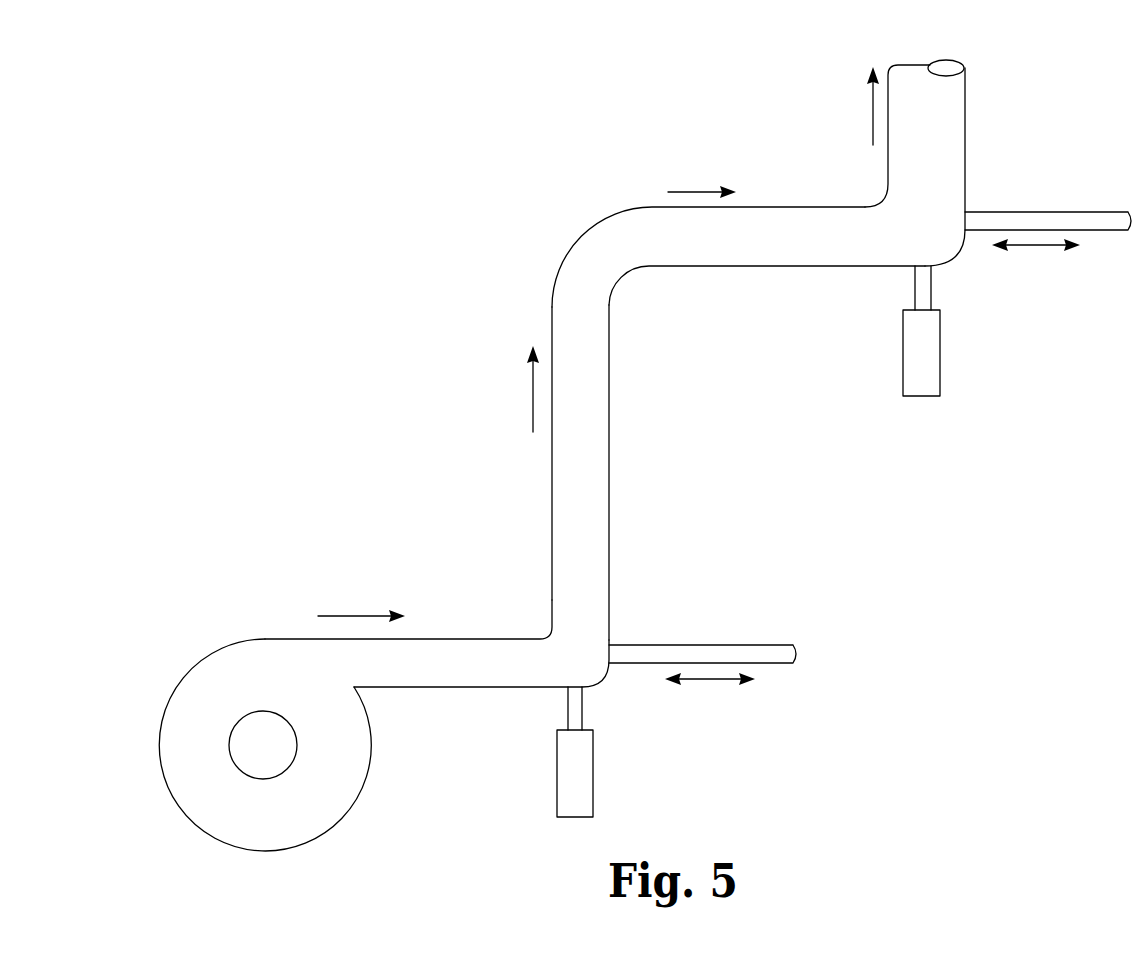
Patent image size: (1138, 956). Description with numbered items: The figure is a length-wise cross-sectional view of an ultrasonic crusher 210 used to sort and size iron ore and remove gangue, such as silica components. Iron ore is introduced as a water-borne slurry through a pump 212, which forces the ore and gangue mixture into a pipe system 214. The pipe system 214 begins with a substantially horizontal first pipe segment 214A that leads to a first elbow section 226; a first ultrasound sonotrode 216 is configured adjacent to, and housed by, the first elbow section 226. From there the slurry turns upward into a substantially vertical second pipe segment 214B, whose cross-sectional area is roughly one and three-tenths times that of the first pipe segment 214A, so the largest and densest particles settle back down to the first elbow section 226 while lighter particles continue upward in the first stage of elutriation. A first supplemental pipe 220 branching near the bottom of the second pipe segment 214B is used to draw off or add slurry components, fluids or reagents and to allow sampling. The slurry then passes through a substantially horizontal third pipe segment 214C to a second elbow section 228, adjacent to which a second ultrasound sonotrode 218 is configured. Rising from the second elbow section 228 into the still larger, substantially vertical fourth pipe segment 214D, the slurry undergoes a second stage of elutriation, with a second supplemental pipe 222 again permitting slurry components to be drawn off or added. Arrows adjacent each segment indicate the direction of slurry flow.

The ultrasonic crusher 210 is at (356, 308).
The pump 212 is at (195, 666).
The pipe system 214 is at (668, 408).
The first pipe segment 214A is at (456, 687).
The second pipe segment 214B is at (609, 432).
The third pipe segment 214C is at (790, 207).
The fourth pipe segment 214D is at (965, 107).
The first ultrasound sonotrode 216 is at (593, 765).
The second ultrasound sonotrode 218 is at (940, 340).
The first supplemental pipe 220 is at (705, 645).
The second supplemental pipe 222 is at (1033, 210).
The first elbow section 226 is at (637, 693).
The second elbow section 228 is at (963, 258).